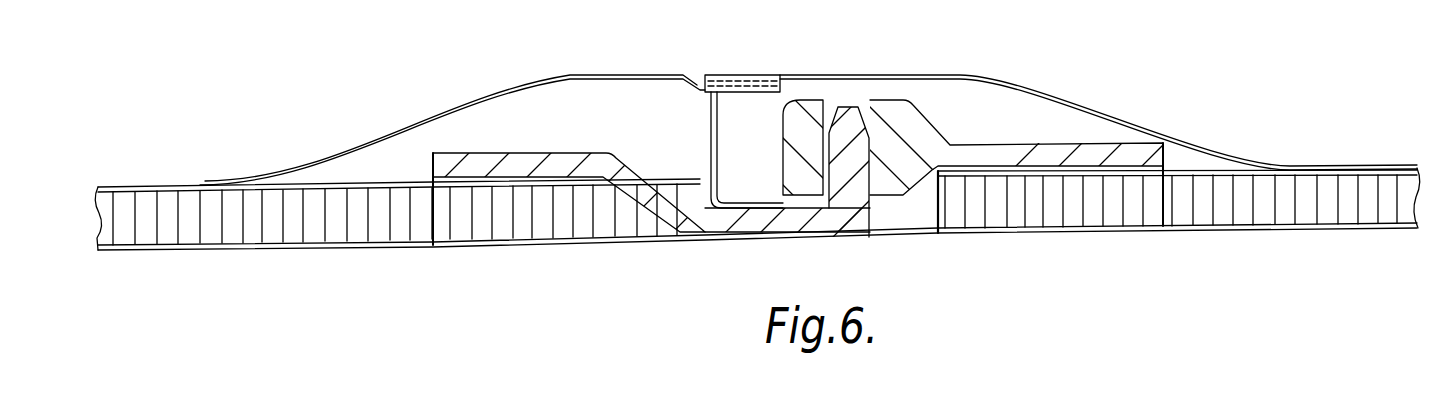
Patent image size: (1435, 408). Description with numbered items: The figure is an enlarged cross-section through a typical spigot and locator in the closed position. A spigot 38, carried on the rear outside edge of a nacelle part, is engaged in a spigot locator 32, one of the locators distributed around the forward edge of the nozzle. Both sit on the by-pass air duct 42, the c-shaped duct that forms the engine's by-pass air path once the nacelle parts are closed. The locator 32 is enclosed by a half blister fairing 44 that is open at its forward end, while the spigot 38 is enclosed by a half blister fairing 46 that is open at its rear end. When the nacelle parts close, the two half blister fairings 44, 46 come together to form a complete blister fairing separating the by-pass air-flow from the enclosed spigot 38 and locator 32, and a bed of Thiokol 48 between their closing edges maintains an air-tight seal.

The spigot locator 32 is at (900, 122).
The spigot 38 is at (847, 200).
The by-pass air duct 42 is at (197, 255).
The half blister fairing 44 is at (1107, 107).
The half blister fairing 46 is at (453, 108).
The bed of Thiokol 48 is at (725, 90).